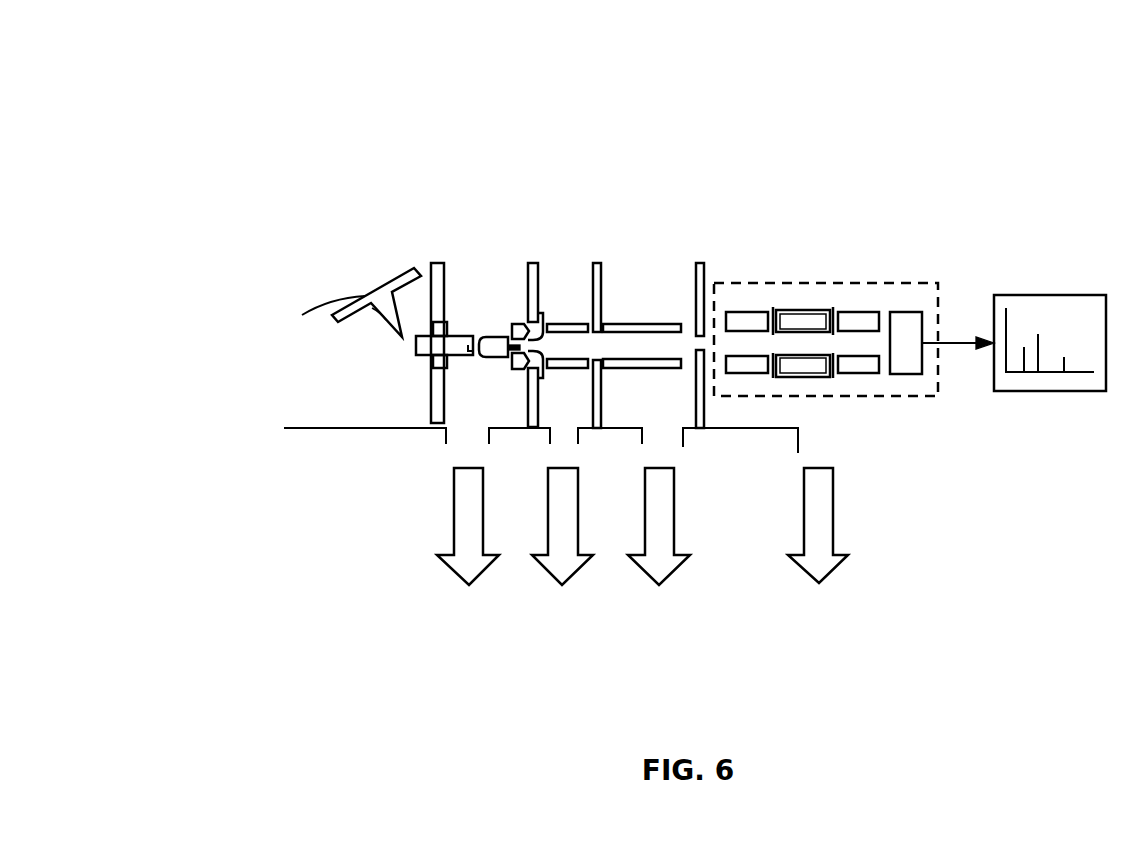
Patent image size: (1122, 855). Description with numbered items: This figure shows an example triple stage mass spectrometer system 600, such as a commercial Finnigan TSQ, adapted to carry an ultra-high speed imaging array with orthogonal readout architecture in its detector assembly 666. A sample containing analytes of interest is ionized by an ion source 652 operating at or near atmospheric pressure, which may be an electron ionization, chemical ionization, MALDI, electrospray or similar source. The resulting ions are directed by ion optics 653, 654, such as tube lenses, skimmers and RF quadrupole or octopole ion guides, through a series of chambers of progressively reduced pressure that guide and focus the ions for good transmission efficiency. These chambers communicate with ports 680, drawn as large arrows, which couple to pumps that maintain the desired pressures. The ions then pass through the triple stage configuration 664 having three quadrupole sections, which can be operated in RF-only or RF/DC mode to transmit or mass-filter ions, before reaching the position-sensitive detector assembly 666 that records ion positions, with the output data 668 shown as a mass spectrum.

The mass spectrometer system 600 is at (325, 76).
The ion source 652 is at (478, 244).
The ion optics 653 is at (562, 311).
The ion optics 654 is at (640, 309).
The triple stage configuration 664 is at (791, 271).
The detector assembly 666 is at (903, 312).
The data output 668 is at (1040, 295).
The ports 680 is at (453, 598).